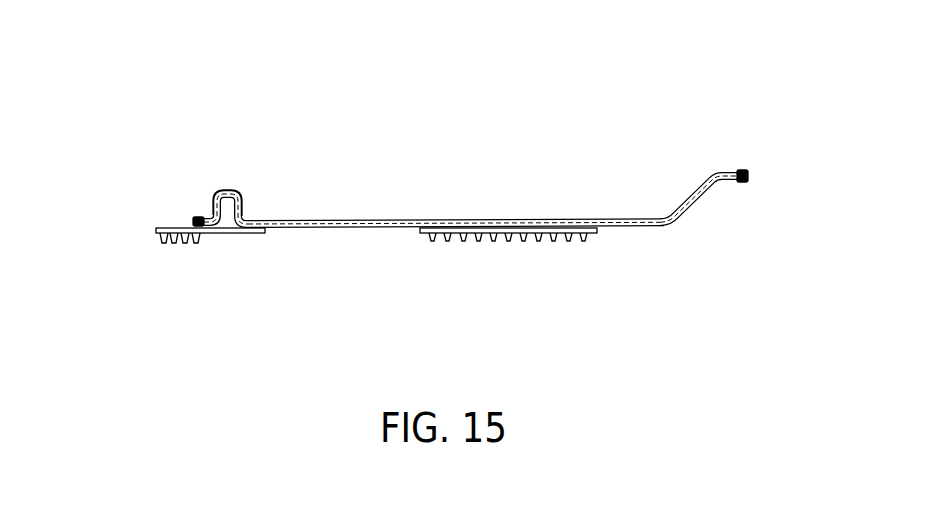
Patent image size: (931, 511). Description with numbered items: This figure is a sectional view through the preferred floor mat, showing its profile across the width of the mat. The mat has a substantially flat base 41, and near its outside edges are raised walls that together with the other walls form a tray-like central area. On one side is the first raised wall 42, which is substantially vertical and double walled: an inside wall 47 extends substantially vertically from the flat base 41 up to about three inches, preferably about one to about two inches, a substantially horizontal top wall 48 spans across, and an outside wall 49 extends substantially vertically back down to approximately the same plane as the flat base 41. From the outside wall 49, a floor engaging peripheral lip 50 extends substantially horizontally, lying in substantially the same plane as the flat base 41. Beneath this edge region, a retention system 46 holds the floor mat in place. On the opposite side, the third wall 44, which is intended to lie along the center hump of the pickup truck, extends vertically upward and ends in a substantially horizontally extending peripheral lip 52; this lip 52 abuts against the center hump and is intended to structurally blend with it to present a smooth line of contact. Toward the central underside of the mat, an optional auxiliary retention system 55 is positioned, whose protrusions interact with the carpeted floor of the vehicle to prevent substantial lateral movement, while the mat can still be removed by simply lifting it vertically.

The flat base 41 is at (444, 176).
The first raised wall 42 is at (214, 204).
The third wall 44 is at (690, 203).
The retention system 46 is at (180, 256).
The inside wall 47 is at (243, 206).
The top wall 48 is at (223, 196).
The outside wall 49 is at (213, 210).
The floor engaging peripheral lip 50 is at (193, 220).
The peripheral lip 52 is at (748, 181).
The auxiliary retention system 55 is at (462, 248).